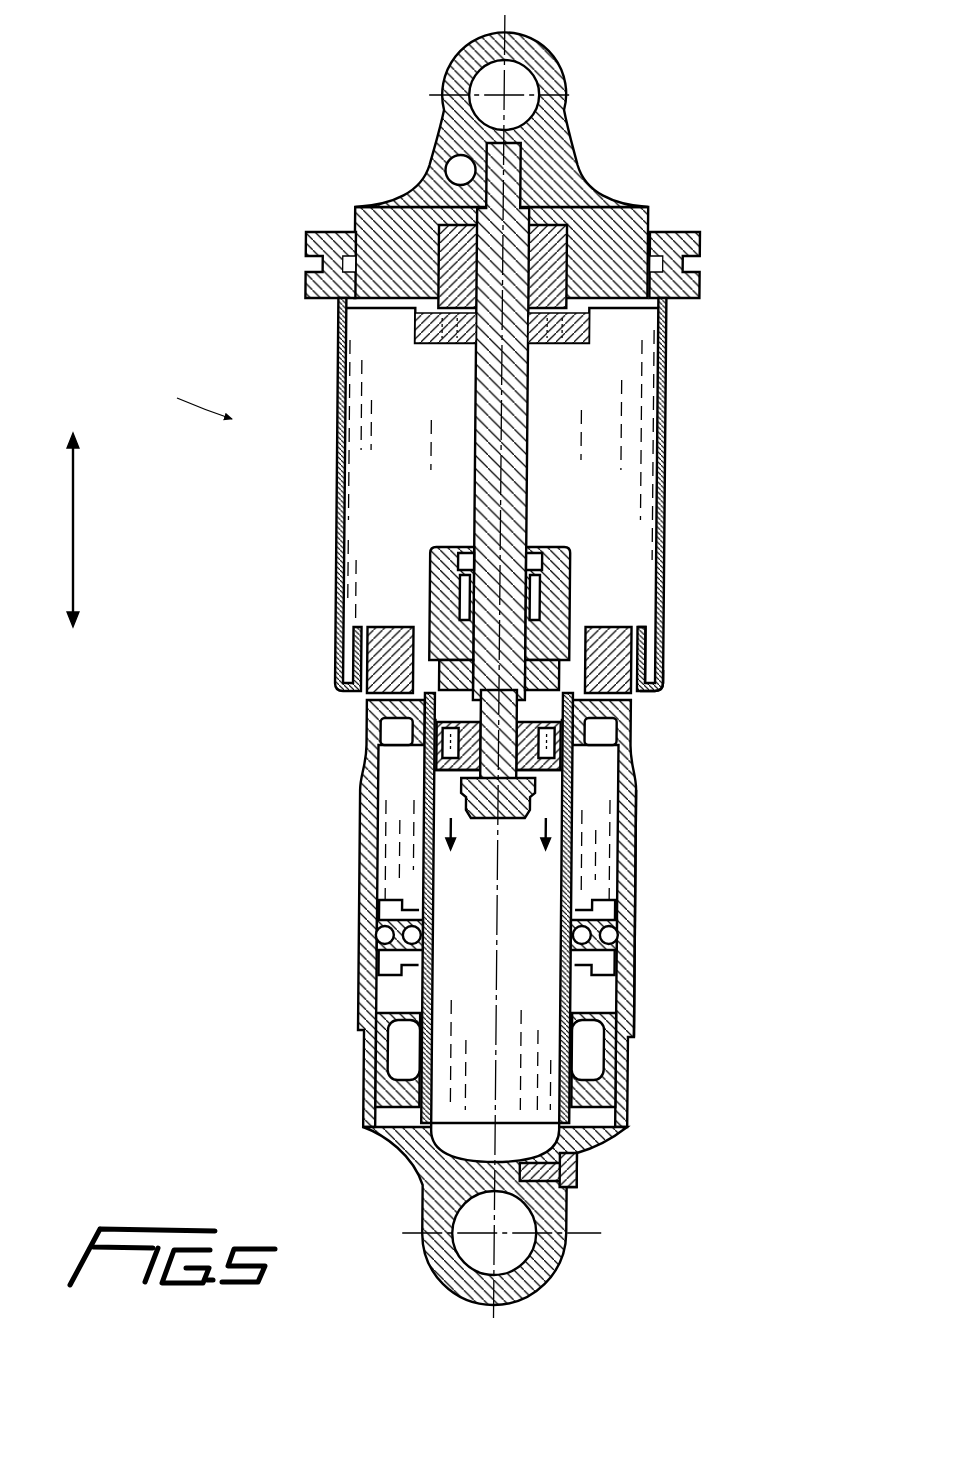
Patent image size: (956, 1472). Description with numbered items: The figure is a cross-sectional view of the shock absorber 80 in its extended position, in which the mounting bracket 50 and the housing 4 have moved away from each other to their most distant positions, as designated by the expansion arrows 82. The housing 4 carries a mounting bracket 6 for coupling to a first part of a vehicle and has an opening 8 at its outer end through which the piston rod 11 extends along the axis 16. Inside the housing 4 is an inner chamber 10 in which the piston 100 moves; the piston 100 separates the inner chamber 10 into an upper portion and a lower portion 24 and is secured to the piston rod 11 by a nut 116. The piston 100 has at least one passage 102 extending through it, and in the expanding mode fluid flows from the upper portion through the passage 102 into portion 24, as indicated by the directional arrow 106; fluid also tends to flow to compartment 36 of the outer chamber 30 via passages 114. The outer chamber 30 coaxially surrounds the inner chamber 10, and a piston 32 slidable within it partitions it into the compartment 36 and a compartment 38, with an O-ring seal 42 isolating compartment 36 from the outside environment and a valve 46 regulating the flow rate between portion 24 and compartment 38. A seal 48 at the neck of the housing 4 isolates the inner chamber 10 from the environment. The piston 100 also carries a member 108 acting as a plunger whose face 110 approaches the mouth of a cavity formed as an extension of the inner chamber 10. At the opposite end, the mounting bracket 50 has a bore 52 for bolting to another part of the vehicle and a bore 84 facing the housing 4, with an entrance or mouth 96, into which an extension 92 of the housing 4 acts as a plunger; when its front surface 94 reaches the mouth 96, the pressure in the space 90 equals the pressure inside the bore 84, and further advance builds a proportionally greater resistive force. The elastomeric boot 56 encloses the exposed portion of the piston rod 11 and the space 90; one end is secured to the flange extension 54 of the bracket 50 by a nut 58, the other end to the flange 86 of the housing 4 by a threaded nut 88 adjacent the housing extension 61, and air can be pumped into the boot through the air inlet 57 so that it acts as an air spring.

The housing 4 is at (635, 878).
The mounting bracket 6 is at (568, 1243).
The opening 8 is at (430, 600).
The inner chamber 10 is at (640, 845).
The piston rod 11 is at (530, 397).
The axis 16 is at (505, 25).
The portion of inner chamber 24 is at (545, 1013).
The outer chamber 30 is at (355, 888).
The piston 32 is at (363, 935).
The compartment 36 is at (400, 845).
The compartment 38 is at (372, 1030).
The O-ring seal 42 is at (630, 745).
The valve 46 is at (580, 1170).
The seal 48 is at (472, 548).
The mounting bracket 50 is at (568, 115).
The bore 52 is at (483, 77).
The flange extension 54 is at (655, 228).
The elastomeric boot 56 is at (665, 350).
The air inlet 57 is at (448, 160).
The nut 58 is at (700, 240).
The extension of housing 61 is at (640, 647).
The shock absorber 80 is at (188, 397).
The expansion arrows 82 is at (73, 527).
The bore 84 is at (548, 220).
The flange 86 is at (345, 600).
The nut 88 is at (640, 690).
The space 90 is at (405, 452).
The extension 92 is at (567, 573).
The front surface 94 is at (545, 548).
The mouth 96 is at (453, 330).
The piston 100 is at (365, 777).
The passage 102 is at (365, 715).
The directional arrow 106 is at (450, 826).
The plunger 108 is at (567, 660).
The face 110 is at (553, 613).
The passages 114 is at (365, 665).
The nut 116 is at (516, 822).